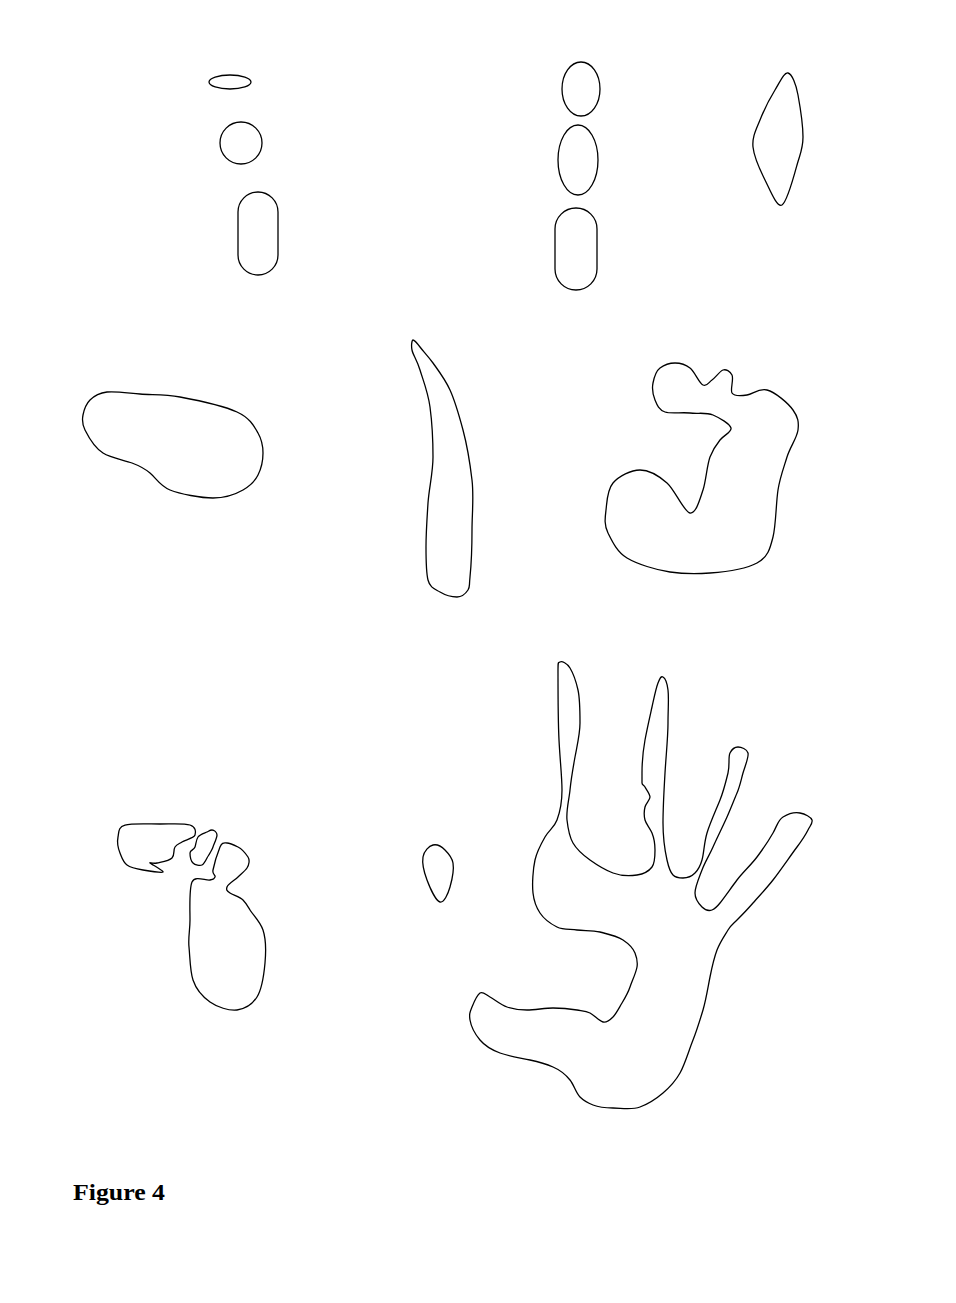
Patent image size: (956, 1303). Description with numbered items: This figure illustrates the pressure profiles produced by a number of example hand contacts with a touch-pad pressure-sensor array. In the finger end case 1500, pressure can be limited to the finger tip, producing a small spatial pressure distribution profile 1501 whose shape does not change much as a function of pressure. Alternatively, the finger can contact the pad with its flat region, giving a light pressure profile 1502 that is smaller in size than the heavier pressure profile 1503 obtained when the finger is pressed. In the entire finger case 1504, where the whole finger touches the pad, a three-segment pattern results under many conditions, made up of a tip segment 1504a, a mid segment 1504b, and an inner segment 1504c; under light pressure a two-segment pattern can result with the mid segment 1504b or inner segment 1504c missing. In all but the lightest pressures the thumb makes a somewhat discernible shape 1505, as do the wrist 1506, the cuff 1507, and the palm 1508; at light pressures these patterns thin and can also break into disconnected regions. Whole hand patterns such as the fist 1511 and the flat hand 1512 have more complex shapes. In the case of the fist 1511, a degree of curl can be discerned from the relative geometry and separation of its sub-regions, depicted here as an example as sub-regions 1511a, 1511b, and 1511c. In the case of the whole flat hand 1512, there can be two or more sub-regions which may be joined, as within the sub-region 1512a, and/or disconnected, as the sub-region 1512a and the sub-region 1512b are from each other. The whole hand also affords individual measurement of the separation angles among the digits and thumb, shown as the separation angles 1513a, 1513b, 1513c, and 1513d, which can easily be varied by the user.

The finger end case 1500 is at (147, 233).
The finger tip spatial pressure distribution profile 1501 is at (241, 81).
The light pressure profile of flat finger region 1502 is at (251, 143).
The heavier pressure profile of flat finger region 1503 is at (256, 233).
The entire finger case 1504 is at (525, 164).
The tip segment of three-segment pattern 1504a is at (570, 89).
The mid segment of three-segment pattern 1504b is at (566, 160).
The inner segment of three-segment pattern 1504c is at (562, 245).
The thumb shape 1505 is at (786, 137).
The wrist 1506 is at (172, 432).
The cuff 1507 is at (407, 468).
The palm 1508 is at (681, 468).
The fist 1511 is at (157, 898).
The fist sub-region 1511a is at (157, 834).
The fist sub-region 1511b is at (210, 827).
The fist sub-region 1511c is at (195, 926).
The flat hand 1512 is at (618, 879).
The joined sub-region of flat hand 1512a is at (641, 885).
The disconnected sub-region of flat hand 1512b is at (444, 886).
The separation angle among digits 1513a is at (789, 811).
The separation angle among digits 1513b is at (738, 738).
The separation angle among digits 1513c is at (652, 694).
The separation angle between thumb and digits 1513d is at (528, 866).